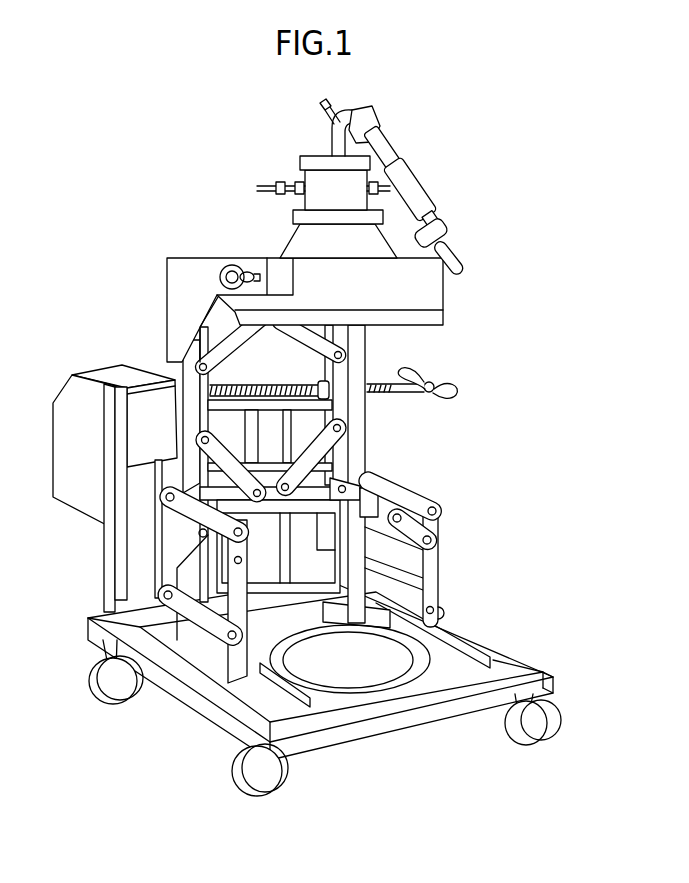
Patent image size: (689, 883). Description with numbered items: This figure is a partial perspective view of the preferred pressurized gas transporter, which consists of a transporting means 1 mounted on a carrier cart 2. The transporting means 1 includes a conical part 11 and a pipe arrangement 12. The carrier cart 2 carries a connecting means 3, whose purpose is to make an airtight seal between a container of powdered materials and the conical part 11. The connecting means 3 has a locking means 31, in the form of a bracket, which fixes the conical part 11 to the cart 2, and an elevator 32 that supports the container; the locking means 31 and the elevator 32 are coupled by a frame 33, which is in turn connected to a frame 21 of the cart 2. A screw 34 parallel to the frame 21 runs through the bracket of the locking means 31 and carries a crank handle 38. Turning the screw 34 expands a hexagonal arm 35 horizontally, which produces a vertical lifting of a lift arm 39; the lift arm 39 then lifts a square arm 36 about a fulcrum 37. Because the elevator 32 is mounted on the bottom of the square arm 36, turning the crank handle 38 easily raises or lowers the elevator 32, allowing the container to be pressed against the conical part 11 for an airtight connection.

The transporting means 1 is at (350, 188).
The conical part 11 is at (297, 238).
The pipe arrangement 12 is at (423, 196).
The carrier cart 2 is at (237, 697).
The connecting means 3 is at (272, 270).
The frame 21 is at (128, 530).
The locking means 31 is at (185, 260).
The elevator 32 is at (392, 673).
The frame 33 is at (165, 573).
The screw 34 is at (262, 388).
The hexagonal arm 35 is at (207, 453).
The square arm 36 is at (432, 578).
The fulcrum 37 is at (402, 512).
The crank handle 38 is at (434, 380).
The lift arm 39 is at (418, 527).